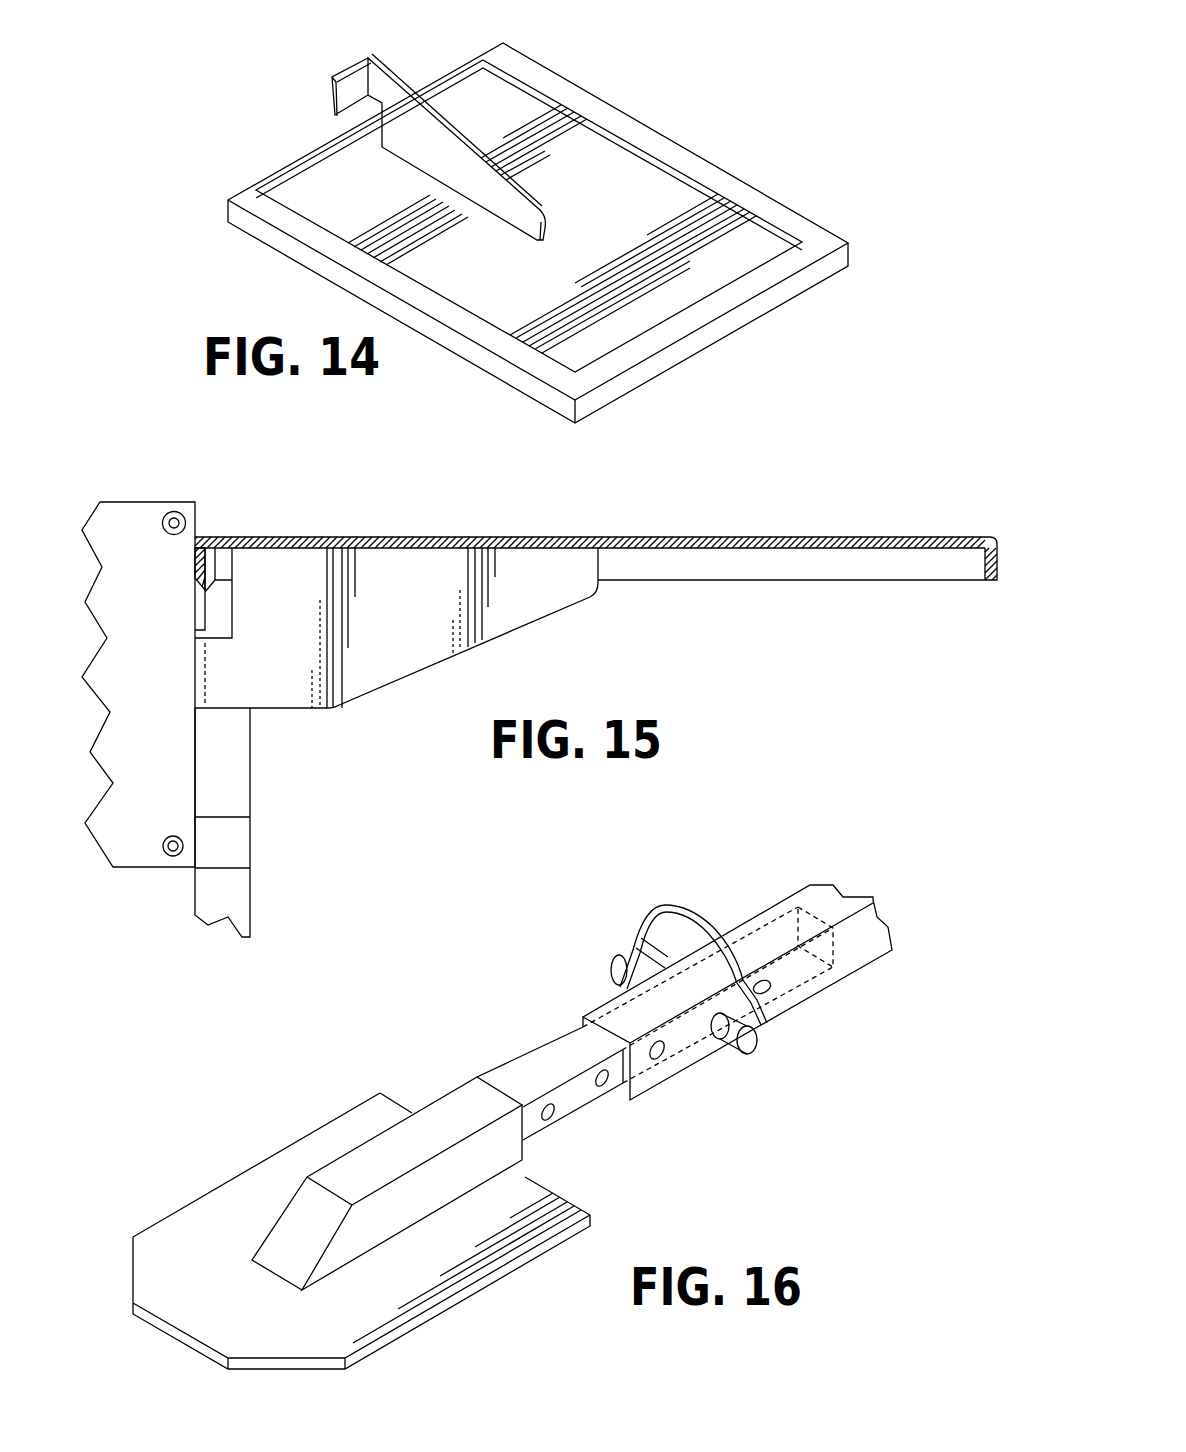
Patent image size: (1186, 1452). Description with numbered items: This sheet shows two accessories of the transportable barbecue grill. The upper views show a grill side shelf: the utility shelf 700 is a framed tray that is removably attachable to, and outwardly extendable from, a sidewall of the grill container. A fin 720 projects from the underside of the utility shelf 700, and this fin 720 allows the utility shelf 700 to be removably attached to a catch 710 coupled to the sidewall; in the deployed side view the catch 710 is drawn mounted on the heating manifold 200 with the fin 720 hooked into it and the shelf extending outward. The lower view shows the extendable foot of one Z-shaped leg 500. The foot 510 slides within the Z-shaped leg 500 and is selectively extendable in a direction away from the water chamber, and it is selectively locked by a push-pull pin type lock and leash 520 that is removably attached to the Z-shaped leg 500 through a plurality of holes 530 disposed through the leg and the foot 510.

In FIG. 15, the heating manifold 200 is at (143, 502).
In FIG. 15, the Z-shaped leg 500 is at (250, 893).
In FIG. 16, the Z-shaped leg 500 is at (762, 912).
In FIG. 16, the foot 510 is at (258, 1160).
In FIG. 16, the push-pull pin type lock and leash 520 is at (758, 1055).
In FIG. 16, the holes 530 is at (783, 997).
In FIG. 14, the utility shelf 700 is at (663, 128).
In FIG. 15, the utility shelf 700 is at (598, 537).
In FIG. 15, the catch 710 is at (208, 592).
In FIG. 14, the fin 720 is at (412, 80).
In FIG. 15, the fin 720 is at (427, 668).